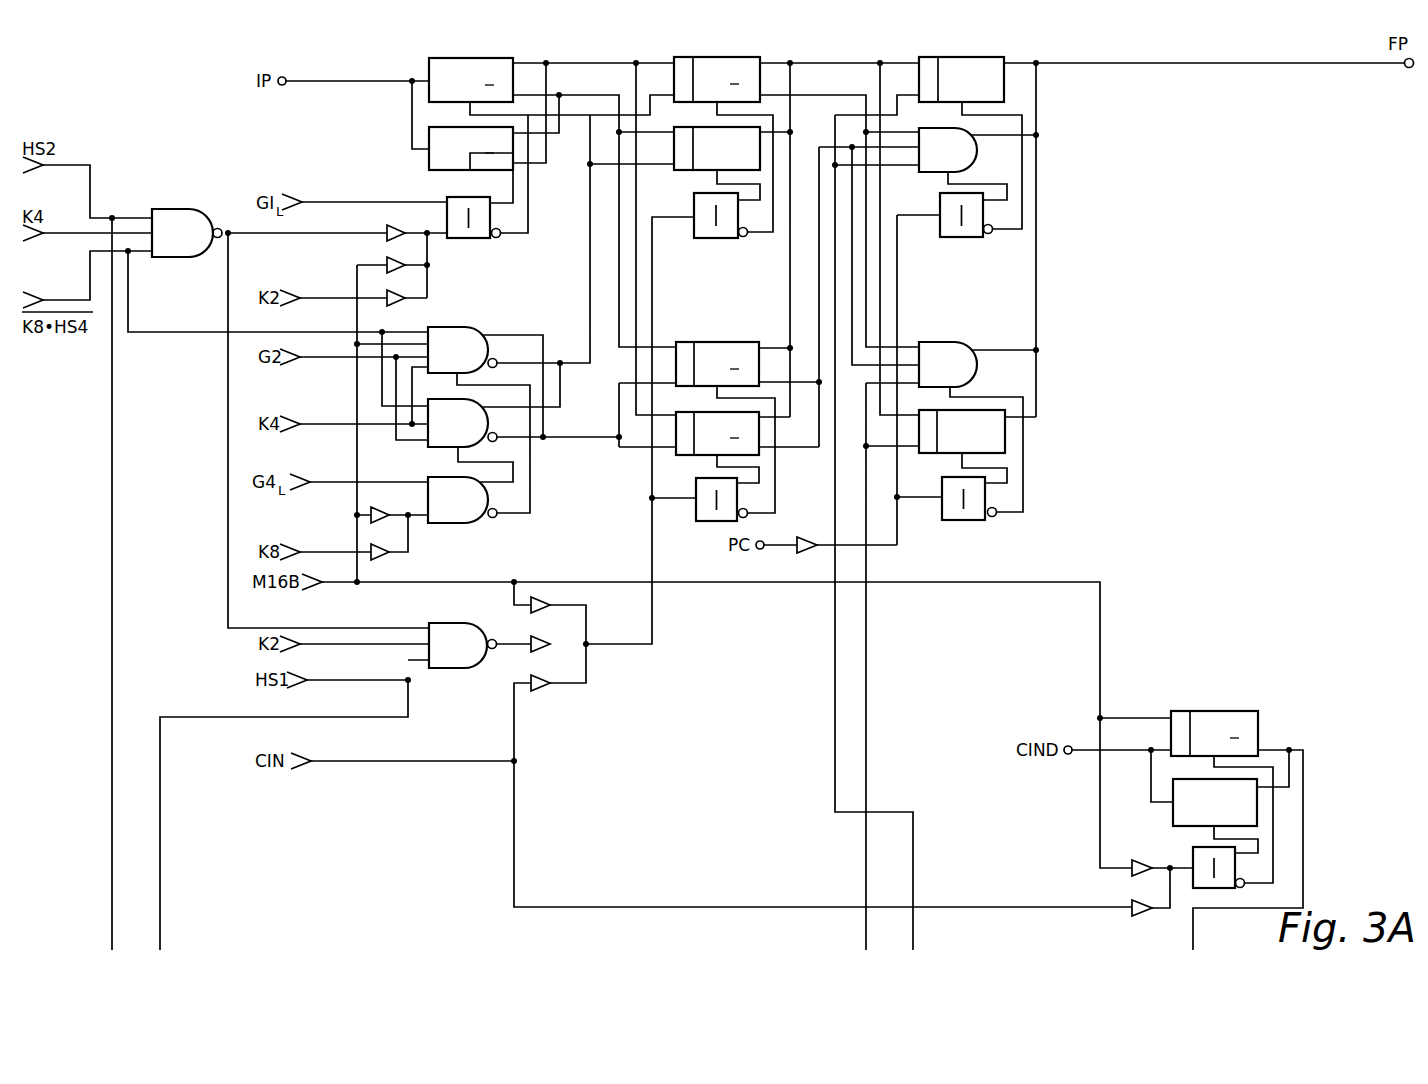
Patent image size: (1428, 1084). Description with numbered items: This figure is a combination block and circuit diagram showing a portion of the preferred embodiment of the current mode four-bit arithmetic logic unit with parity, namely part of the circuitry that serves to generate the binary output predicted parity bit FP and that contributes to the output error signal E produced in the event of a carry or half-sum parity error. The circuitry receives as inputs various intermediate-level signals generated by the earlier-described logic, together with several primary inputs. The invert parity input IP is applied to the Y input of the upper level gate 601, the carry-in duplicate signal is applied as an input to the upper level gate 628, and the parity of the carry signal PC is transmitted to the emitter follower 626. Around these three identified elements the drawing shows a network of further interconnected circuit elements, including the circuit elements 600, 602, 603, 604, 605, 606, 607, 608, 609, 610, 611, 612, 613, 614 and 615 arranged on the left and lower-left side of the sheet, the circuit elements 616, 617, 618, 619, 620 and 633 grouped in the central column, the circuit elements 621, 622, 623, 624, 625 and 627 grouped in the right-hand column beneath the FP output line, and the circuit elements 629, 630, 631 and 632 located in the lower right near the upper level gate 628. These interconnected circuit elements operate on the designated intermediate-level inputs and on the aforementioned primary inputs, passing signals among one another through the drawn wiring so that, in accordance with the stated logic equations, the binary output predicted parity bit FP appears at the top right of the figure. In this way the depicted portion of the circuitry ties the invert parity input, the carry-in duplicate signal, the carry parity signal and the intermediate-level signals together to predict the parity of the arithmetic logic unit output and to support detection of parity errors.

The NAND gate 600 is at (186, 214).
The upper level gate 601 is at (458, 57).
The flip-flop 602 is at (467, 126).
The inverter 603 is at (467, 197).
The buffer 604 is at (386, 228).
The buffer 605 is at (386, 261).
The buffer 606 is at (399, 303).
The AND gate 607 is at (470, 328).
The AND gate 608 is at (464, 401).
The AND gate 609 is at (453, 478).
The buffer 610 is at (385, 504).
The buffer 611 is at (385, 556).
The NAND gate 612 is at (452, 623).
The buffer 613 is at (548, 602).
The buffer 614 is at (541, 639).
The buffer 615 is at (545, 691).
The gated flip-flop 616 is at (701, 57).
The inverter 617 is at (703, 194).
The gated flip-flop 618 is at (708, 342).
The gated flip-flop 619 is at (701, 412).
The inverter 620 is at (705, 478).
The gated flip-flop 621 is at (954, 57).
The AND gate 622 is at (951, 128).
The inverter 623 is at (943, 194).
The AND gate 624 is at (951, 342).
The gated flip-flop 625 is at (946, 410).
The emitter follower 626 is at (820, 522).
The inverter 627 is at (946, 477).
The upper level gate 628 is at (1207, 711).
The flip-flop 629 is at (1207, 779).
The buffer 630 is at (1126, 876).
The buffer 631 is at (1126, 915).
The inverter 632 is at (1190, 850).
The gated flip-flop 633 is at (706, 127).